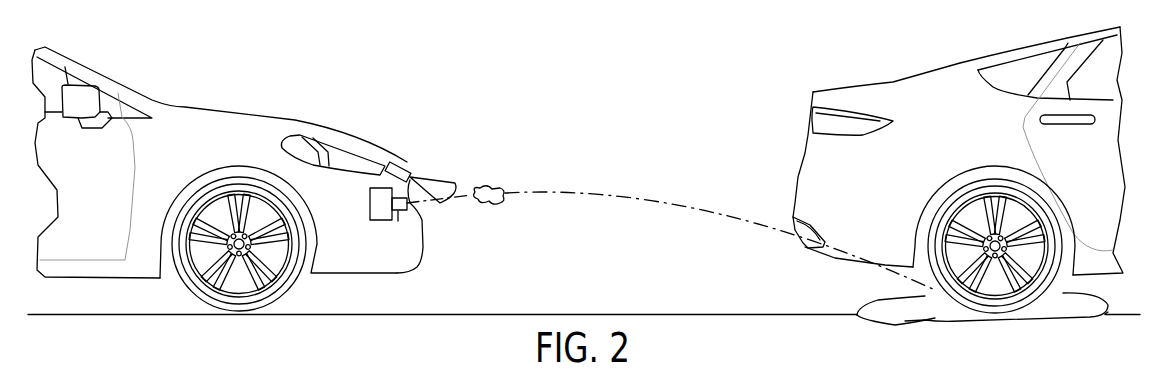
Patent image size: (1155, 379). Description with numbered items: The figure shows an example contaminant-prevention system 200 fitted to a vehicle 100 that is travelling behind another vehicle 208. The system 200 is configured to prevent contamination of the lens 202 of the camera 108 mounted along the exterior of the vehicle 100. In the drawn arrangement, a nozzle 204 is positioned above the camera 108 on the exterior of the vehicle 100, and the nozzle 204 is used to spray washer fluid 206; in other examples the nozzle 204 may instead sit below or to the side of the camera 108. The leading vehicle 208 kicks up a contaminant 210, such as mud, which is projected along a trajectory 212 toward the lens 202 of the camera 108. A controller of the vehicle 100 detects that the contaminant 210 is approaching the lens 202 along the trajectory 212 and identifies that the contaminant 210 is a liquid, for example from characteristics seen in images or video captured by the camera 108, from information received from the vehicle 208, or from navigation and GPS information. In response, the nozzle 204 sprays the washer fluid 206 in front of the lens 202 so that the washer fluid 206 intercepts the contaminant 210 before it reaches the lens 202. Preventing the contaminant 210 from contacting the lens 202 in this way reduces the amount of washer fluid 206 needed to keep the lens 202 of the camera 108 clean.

The vehicle 100 is at (200, 74).
The contaminant-prevention system 200 is at (425, 121).
The nozzle 204 is at (402, 162).
The washer fluid 206 is at (433, 180).
The contaminant 210 is at (485, 184).
The lens 202 is at (398, 212).
The camera 108 is at (380, 220).
The trajectory 212 is at (650, 197).
The vehicle 208 is at (913, 59).